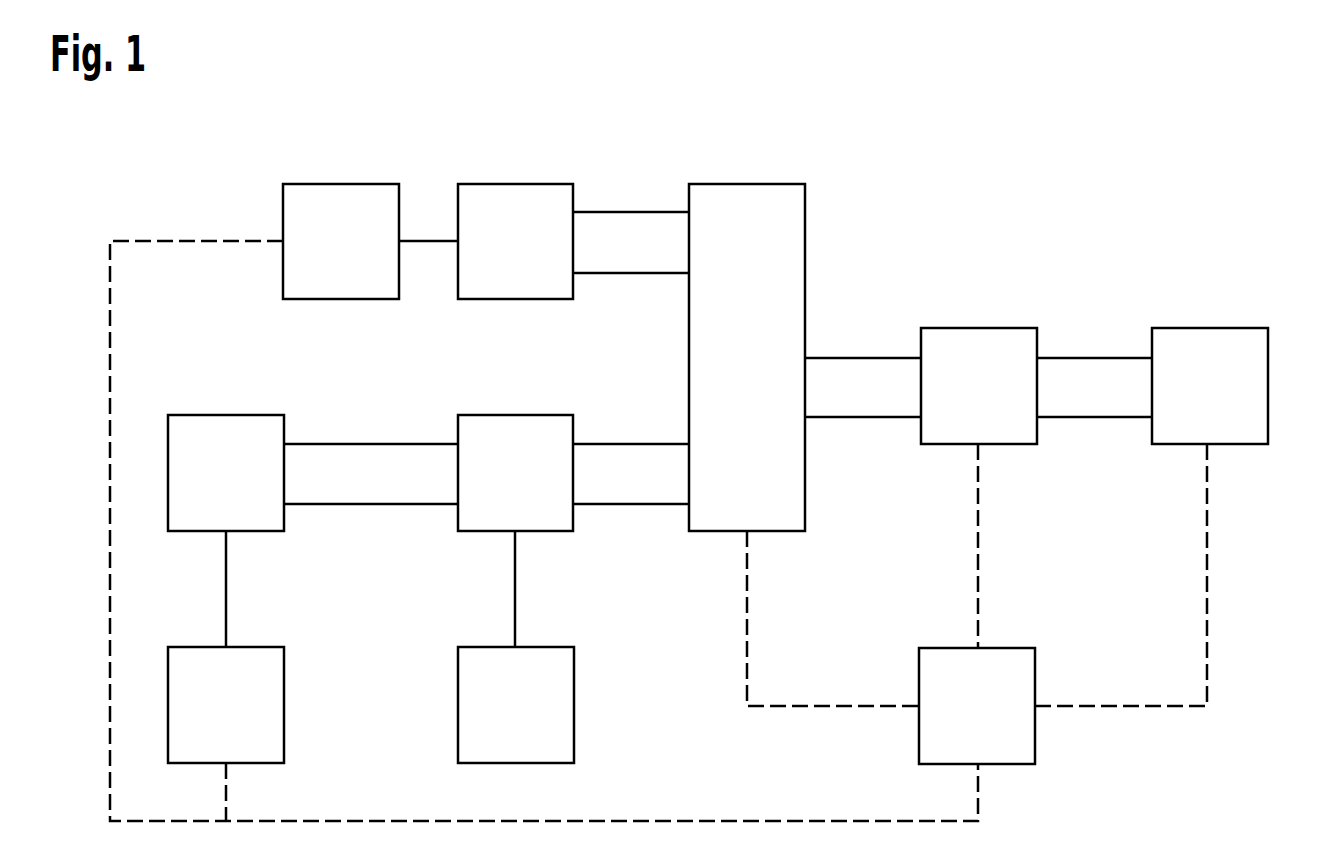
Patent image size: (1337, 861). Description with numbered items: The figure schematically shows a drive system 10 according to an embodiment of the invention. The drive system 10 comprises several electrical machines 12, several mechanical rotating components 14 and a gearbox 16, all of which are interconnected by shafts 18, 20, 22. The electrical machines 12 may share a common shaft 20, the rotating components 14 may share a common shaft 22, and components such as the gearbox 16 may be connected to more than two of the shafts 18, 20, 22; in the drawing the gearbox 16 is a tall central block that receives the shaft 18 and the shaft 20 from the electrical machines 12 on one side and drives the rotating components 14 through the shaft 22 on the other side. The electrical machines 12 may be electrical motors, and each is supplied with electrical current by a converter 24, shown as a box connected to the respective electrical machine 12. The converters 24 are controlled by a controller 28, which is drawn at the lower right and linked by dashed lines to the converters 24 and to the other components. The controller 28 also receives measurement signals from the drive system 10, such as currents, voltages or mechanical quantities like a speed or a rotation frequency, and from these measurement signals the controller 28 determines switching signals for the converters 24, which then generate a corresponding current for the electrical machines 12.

The drive system 10 is at (1242, 178).
The electrical machine 12 is at (518, 184).
The mechanical rotating component 14 is at (980, 328).
The gearbox 16 is at (750, 184).
The shaft 18 is at (632, 212).
The shaft 20 is at (345, 444).
The shaft 22 is at (865, 358).
The converter 24 is at (343, 184).
The controller 28 is at (1015, 648).